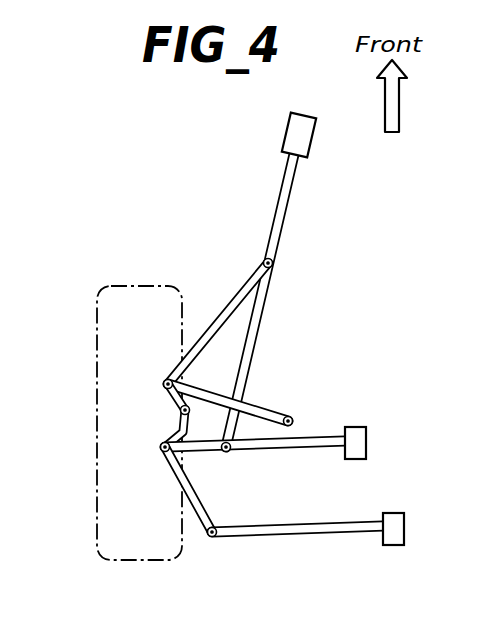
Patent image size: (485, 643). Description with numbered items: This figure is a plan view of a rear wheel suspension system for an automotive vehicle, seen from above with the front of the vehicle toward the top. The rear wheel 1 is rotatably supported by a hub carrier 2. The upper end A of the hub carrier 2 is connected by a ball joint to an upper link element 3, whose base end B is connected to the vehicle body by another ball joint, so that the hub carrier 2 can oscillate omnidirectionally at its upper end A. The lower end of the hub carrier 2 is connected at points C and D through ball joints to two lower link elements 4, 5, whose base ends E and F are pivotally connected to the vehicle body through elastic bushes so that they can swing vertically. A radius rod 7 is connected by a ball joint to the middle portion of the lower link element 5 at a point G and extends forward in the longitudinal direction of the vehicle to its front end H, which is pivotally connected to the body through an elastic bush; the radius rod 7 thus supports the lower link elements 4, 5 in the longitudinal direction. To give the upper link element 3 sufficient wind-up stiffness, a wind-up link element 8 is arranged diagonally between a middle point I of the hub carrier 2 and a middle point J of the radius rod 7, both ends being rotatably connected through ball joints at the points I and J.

The rear wheel 1 is at (97, 520).
The hub carrier 2 is at (171, 427).
The upper link element 3 is at (267, 400).
The lower link element 4 is at (308, 536).
The lower link element 5 is at (297, 452).
The radius rod 7 is at (296, 190).
The wind-up link element 8 is at (238, 296).
The upper end of hub carrier A is at (164, 382).
The base end of upper link element B is at (292, 418).
The connecting point C is at (210, 538).
The connecting point D is at (162, 448).
The base end of lower link element 4 E is at (405, 528).
The base end of lower link element 5 F is at (367, 443).
The connecting point G is at (229, 452).
The front end of radius rod H is at (313, 140).
The middle point of hub carrier I is at (180, 409).
The middle point of radius rod J is at (273, 263).